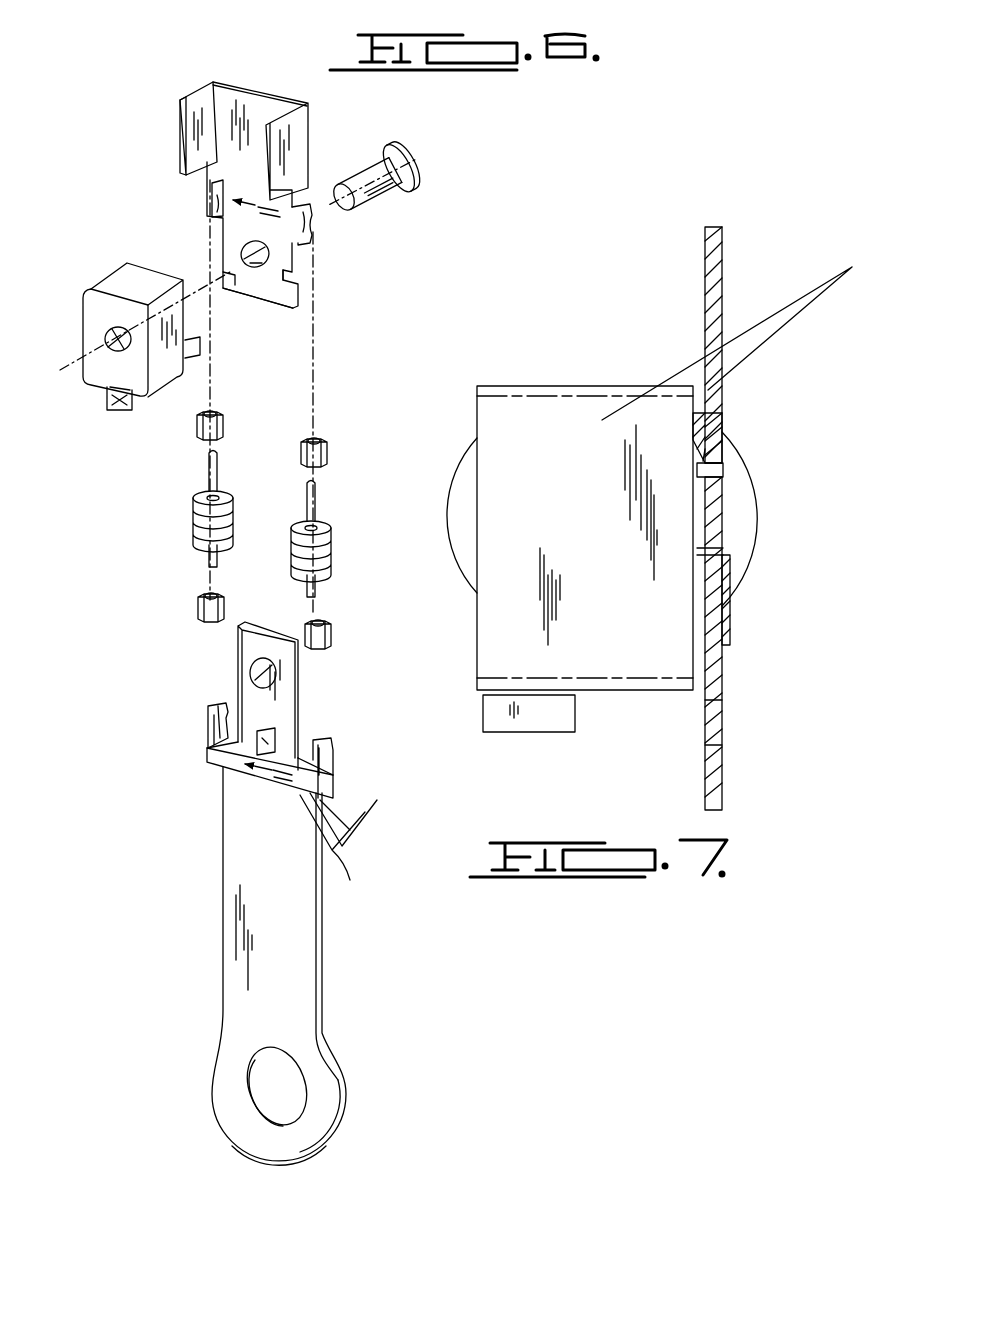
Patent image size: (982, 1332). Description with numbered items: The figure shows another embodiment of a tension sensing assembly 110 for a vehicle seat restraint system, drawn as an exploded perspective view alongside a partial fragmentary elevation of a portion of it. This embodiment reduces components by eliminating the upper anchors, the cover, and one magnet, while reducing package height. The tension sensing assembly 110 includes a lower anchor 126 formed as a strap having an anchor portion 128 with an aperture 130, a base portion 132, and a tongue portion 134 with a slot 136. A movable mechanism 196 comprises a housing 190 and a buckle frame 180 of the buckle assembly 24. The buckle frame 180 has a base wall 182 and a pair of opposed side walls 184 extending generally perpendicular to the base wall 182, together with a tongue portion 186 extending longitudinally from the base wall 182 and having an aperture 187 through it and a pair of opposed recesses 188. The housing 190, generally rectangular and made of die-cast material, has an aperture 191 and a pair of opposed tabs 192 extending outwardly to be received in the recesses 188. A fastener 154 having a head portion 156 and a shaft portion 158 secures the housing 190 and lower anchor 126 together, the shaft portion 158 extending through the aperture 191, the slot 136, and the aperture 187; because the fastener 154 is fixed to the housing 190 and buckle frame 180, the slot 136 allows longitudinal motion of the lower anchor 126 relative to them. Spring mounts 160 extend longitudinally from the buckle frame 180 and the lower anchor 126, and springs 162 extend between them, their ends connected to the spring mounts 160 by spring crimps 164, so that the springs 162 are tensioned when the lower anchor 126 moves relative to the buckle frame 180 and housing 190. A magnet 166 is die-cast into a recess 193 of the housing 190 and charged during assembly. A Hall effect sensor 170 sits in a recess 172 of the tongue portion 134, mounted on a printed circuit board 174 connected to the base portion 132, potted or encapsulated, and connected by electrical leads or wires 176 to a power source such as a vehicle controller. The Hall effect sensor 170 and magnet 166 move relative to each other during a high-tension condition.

In FIG. 6, the buckle assembly 24 is at (197, 80).
In FIG. 7, the buckle assembly 24 is at (727, 283).
In FIG. 6, the tension sensing assembly 110 is at (88, 165).
In FIG. 7, the tension sensing assembly 110 is at (585, 320).
In FIG. 6, the lower anchor 126 is at (255, 907).
In FIG. 7, the lower anchor 126 is at (715, 778).
In FIG. 6, the anchor portion 128 is at (290, 1143).
In FIG. 6, the aperture 130 is at (260, 1090).
In FIG. 6, the base portion 132 is at (235, 775).
In FIG. 6, the tongue portion 134 is at (283, 708).
In FIG. 6, the slot 136 is at (263, 677).
In FIG. 6, the fastener 154 is at (366, 172).
In FIG. 7, the fastener 154 is at (735, 465).
In FIG. 6, the head portion 156 is at (418, 163).
In FIG. 7, the head portion 156 is at (462, 468).
In FIG. 6, the shaft portion 158 is at (383, 190).
In FIG. 7, the shaft portion 158 is at (735, 562).
In FIG. 6, the spring mounts 160 is at (213, 193).
In FIG. 6, the springs 162 is at (195, 517).
In FIG. 6, the spring crimps 164 is at (198, 425).
In FIG. 6, the magnet 166 is at (125, 412).
In FIG. 7, the magnet 166 is at (537, 722).
In FIG. 6, the Hall effect sensor 170 is at (273, 740).
In FIG. 7, the Hall effect sensor 170 is at (715, 738).
In FIG. 6, the recess 172 is at (262, 755).
In FIG. 7, the recess 172 is at (717, 706).
In FIG. 6, the printed circuit board 174 is at (318, 778).
In FIG. 6, the electrical leads or wires 176 is at (335, 818).
In FIG. 6, the buckle frame 180 is at (313, 117).
In FIG. 6, the base wall 182 is at (241, 100).
In FIG. 6, the side walls 184 is at (196, 125).
In FIG. 6, the tongue portion 186 is at (282, 247).
In FIG. 6, the aperture 187 is at (250, 268).
In FIG. 6, the recesses 188 is at (232, 275).
In FIG. 6, the housing 190 is at (95, 297).
In FIG. 7, the housing 190 is at (650, 655).
In FIG. 6, the aperture 191 is at (112, 338).
In FIG. 6, the tabs 192 is at (195, 350).
In FIG. 6, the recess 193 is at (108, 400).
In FIG. 7, the movable mechanism 196 is at (761, 332).